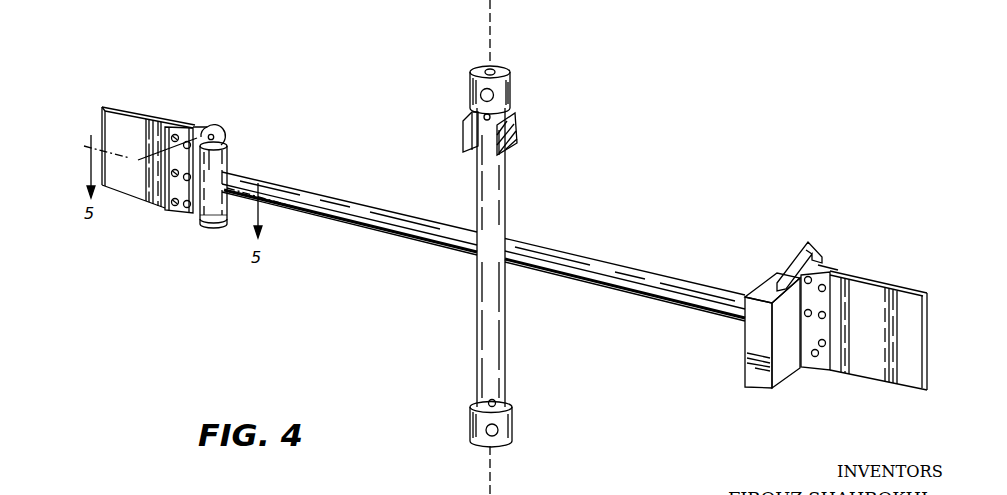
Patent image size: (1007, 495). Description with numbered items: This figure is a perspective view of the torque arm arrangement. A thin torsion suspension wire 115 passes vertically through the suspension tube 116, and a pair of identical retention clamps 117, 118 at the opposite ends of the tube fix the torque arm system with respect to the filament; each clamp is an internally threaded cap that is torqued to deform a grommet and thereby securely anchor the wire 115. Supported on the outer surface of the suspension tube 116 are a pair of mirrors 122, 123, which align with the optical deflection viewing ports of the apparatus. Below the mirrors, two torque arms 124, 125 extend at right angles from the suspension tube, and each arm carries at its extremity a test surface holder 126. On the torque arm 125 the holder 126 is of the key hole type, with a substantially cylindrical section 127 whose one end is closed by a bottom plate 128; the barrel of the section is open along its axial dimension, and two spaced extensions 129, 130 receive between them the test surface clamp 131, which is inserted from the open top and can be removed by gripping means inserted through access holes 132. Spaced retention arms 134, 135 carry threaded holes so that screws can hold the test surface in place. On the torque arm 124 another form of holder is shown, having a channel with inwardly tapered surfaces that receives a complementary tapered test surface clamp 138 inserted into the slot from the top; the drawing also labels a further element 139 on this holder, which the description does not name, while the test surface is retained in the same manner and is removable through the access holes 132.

The torsion suspension wire 115 is at (490, 37).
The suspension tube 116 is at (501, 223).
The retention clamp 117 is at (514, 423).
The retention clamp 118 is at (508, 88).
The mirror 122 is at (520, 128).
The mirror 123 is at (466, 132).
The torque arm 124 is at (611, 273).
The torque arm 125 is at (381, 217).
The test surface holder 126 is at (190, 226).
The cylindrical section 127 is at (223, 162).
The bottom plate 128 is at (222, 230).
The extension 129 is at (168, 193).
The extension 130 is at (207, 119).
The test surface clamp 131 is at (195, 125).
The access hole 132 is at (188, 178).
The retention arm 134 is at (175, 122).
The retention arm 135 is at (187, 147).
The test surface clamp 138 is at (814, 250).
The hinge plate 139 is at (812, 284).